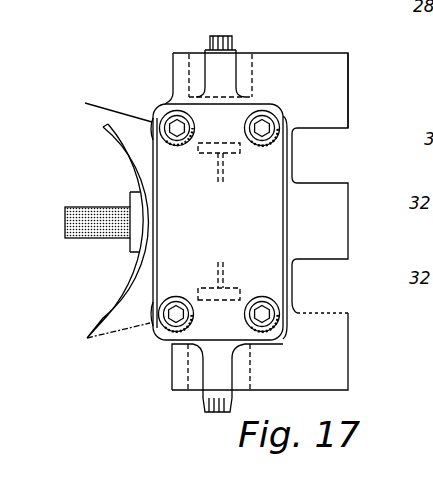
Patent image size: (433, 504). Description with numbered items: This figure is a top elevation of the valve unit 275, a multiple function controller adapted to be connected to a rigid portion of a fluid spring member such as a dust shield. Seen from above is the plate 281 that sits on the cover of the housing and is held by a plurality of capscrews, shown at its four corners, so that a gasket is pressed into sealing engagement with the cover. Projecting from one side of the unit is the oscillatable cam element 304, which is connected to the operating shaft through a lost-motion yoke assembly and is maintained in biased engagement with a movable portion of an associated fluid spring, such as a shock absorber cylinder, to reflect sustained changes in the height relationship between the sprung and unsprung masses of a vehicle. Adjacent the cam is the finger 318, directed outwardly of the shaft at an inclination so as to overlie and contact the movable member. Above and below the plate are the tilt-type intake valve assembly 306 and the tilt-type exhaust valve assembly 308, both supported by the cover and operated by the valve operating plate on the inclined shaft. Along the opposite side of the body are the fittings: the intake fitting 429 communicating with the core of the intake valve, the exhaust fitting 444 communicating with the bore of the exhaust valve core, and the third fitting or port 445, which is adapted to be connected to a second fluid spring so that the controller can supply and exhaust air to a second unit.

The valve unit 275 is at (128, 175).
The plate 281 is at (202, 330).
The oscillatable cam element 304 is at (119, 203).
The tilt-type intake valve assembly 306 is at (183, 373).
The tilt-type exhaust valve assembly 308 is at (257, 69).
The finger 318 is at (98, 230).
The intake fitting 429 is at (337, 368).
The exhaust fitting 444 is at (338, 83).
The third fitting or port 445 is at (315, 192).